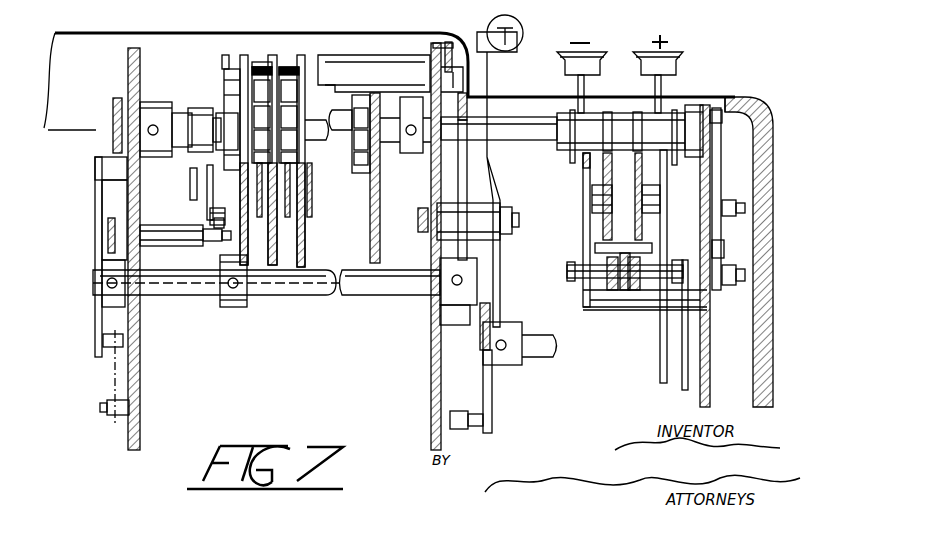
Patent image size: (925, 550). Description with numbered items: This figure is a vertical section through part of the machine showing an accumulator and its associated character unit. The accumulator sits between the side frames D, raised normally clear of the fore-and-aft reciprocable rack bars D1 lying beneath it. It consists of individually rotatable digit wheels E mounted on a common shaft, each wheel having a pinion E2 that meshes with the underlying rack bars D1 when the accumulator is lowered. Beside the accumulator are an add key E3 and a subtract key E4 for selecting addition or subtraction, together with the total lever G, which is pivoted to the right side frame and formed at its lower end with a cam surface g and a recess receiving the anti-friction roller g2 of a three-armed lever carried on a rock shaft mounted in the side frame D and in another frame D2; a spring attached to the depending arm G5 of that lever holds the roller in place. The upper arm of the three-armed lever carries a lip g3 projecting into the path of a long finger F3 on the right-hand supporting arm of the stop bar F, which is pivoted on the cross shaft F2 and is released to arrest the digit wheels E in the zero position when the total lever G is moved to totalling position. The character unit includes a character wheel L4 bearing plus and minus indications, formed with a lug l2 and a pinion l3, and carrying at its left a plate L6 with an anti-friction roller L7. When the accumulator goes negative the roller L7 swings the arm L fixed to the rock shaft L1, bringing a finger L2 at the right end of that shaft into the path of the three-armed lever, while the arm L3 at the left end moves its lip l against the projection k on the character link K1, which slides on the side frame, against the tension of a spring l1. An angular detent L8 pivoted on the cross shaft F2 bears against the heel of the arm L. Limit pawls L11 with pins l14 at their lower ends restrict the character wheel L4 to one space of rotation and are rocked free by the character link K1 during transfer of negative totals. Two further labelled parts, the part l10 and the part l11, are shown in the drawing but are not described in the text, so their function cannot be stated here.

The side frames D is at (140, 402).
The rack bars D1 is at (272, 252).
The frame D2 is at (700, 395).
The character link K1 is at (113, 102).
The projection k is at (113, 152).
The lip l is at (300, 57).
The spring l1 is at (113, 370).
The lug l2 is at (241, 56).
The pinion l3 is at (256, 62).
The cylinder l10 is at (198, 248).
The nut l11 is at (226, 222).
The pins l14 is at (216, 170).
The arm L is at (226, 258).
The rock shaft L1 is at (205, 292).
The finger L2 is at (477, 262).
The arm L3 is at (95, 218).
The character wheel L4 is at (232, 88).
The plate L6 is at (222, 60).
The anti-friction roller L7 is at (225, 212).
The angular detent L8 is at (207, 205).
The limit pawls L11 is at (190, 186).
The digit wheels E is at (266, 68).
The pinions E2 is at (360, 98).
The add key E3 is at (670, 53).
The subtract key E4 is at (592, 53).
The stop bar F is at (372, 58).
The cross shaft F2 is at (540, 116).
The finger F3 is at (430, 170).
The total lever G is at (512, 24).
The depending arm G5 is at (492, 404).
The cam surface g is at (500, 318).
The anti-friction roller g2 is at (512, 325).
The lip g3 is at (418, 216).